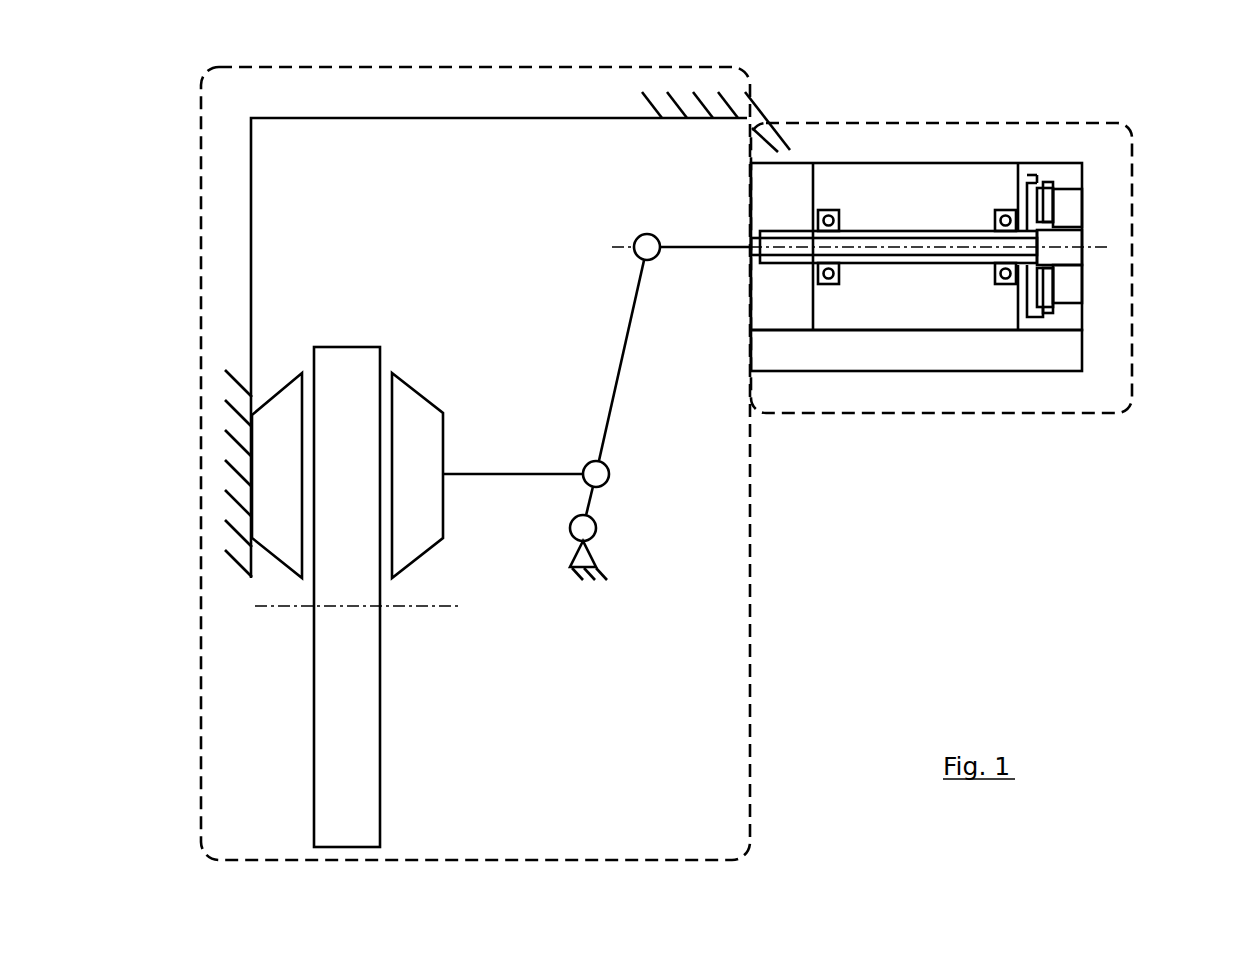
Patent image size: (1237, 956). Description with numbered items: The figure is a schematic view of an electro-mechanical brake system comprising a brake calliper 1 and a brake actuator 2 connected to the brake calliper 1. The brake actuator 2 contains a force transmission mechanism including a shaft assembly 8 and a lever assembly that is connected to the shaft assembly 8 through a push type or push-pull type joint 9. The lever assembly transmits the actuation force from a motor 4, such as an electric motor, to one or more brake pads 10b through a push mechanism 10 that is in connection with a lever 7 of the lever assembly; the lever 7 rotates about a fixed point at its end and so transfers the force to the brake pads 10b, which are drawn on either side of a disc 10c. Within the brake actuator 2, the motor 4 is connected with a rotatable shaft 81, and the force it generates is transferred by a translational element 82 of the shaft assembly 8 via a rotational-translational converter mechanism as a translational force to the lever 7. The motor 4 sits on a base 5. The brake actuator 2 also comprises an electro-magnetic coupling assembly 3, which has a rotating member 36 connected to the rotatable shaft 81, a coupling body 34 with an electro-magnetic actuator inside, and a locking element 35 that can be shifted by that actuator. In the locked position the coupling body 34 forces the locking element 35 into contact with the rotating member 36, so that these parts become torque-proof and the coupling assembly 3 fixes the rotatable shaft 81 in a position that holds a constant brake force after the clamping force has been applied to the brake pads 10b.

The brake calliper 1 is at (736, 68).
The brake actuator 2 is at (850, 123).
The coupling assembly 3 is at (1033, 318).
The motor 4 is at (935, 317).
The base 5 is at (850, 357).
The lever 7 is at (615, 395).
The shaft assembly 8 is at (700, 245).
The rotatable shaft 81 is at (783, 220).
The translational element 82 is at (752, 237).
The joint 9 is at (638, 237).
The push mechanism 10 is at (545, 473).
The brake pads 10b is at (417, 543).
The disc 10c is at (357, 743).
The coupling body 34 is at (1070, 208).
The locking element 35 is at (1047, 203).
The rotating member 36 is at (1030, 290).